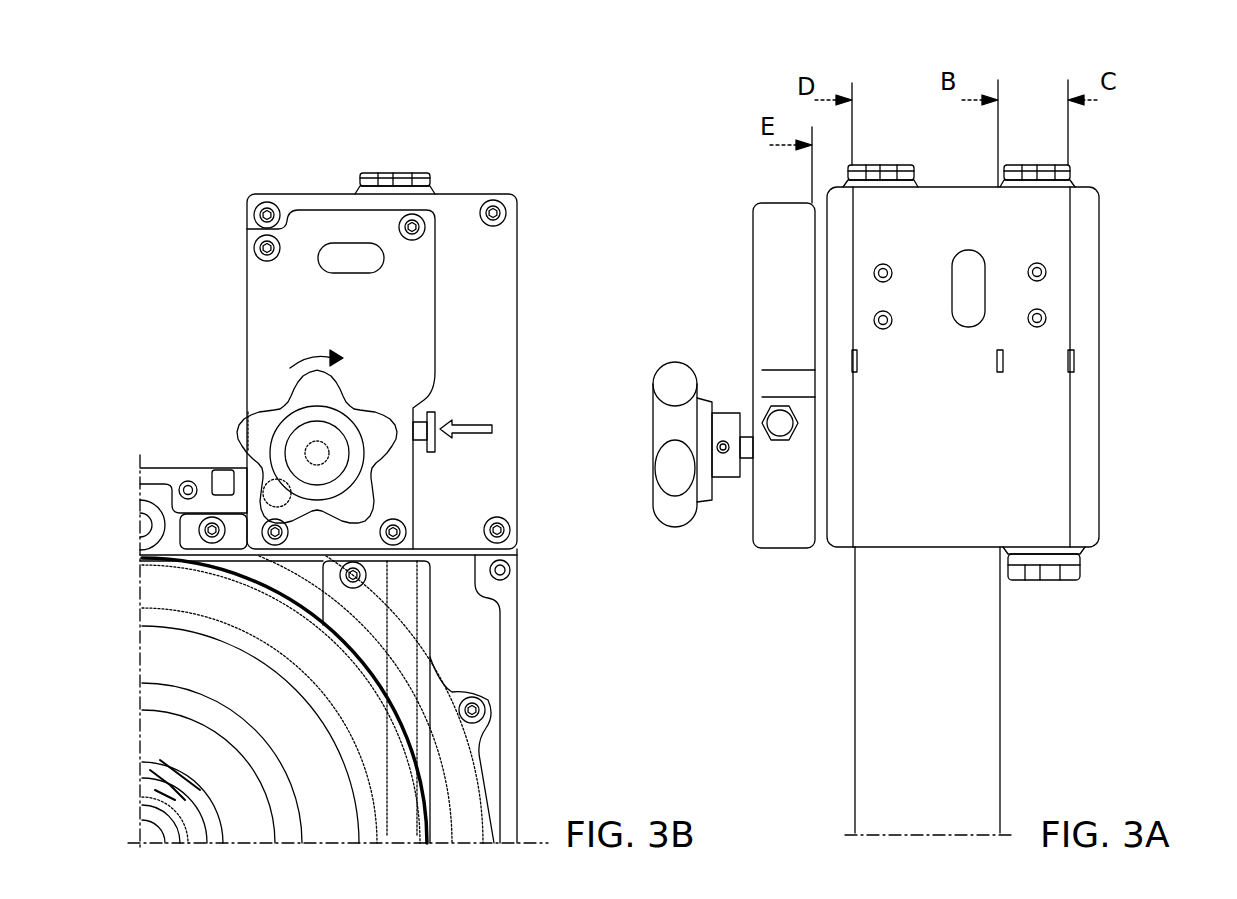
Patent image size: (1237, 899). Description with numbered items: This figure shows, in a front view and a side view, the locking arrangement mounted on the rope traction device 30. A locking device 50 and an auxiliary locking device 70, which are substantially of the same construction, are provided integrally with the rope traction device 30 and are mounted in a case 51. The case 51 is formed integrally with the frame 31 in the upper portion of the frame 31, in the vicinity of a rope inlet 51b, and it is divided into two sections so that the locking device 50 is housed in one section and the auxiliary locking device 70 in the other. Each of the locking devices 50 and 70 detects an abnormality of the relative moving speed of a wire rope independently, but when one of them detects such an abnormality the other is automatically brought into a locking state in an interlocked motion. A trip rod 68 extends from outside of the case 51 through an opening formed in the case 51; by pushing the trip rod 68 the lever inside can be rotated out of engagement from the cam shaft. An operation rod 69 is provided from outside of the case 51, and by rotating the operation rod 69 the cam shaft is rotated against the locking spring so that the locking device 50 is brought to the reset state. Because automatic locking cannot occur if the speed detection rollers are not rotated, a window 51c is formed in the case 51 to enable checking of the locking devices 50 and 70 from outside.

In FIG. 3B, the rope traction device 30 is at (121, 540).
In FIG. 3A, the rope traction device 30 is at (1045, 624).
In FIG. 3B, the frame 31 is at (507, 674).
In FIG. 3A, the frame 31 is at (978, 715).
In FIG. 3B, the locking device 50 is at (296, 185).
In FIG. 3A, the locking device 50 is at (731, 188).
In FIG. 3B, the case 51 is at (497, 296).
In FIG. 3A, the case 51 is at (978, 455).
In FIG. 3B, the rope inlet 51b is at (398, 178).
In FIG. 3A, the rope inlet 51b is at (878, 165).
In FIG. 3B, the window 51c is at (345, 248).
In FIG. 3A, the window 51c is at (968, 293).
In FIG. 3B, the trip rod 68 is at (437, 452).
In FIG. 3A, the trip rod 68 is at (777, 433).
In FIG. 3B, the operation rod 69 is at (240, 420).
In FIG. 3A, the operation rod 69 is at (675, 385).
In FIG. 3A, the auxiliary locking device 70 is at (1135, 229).